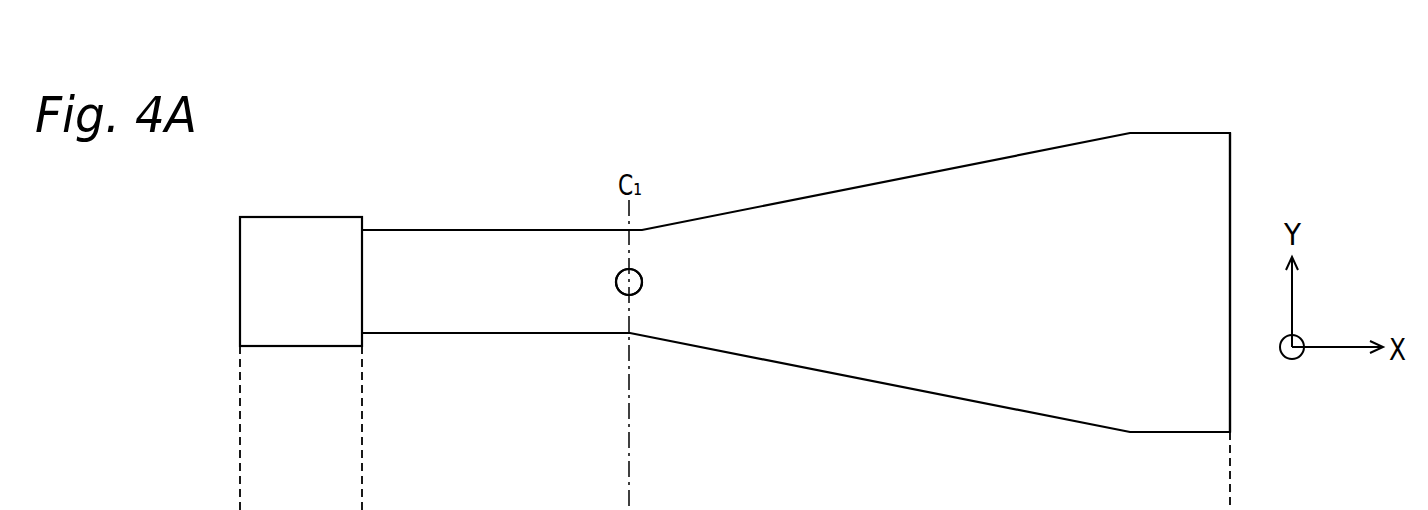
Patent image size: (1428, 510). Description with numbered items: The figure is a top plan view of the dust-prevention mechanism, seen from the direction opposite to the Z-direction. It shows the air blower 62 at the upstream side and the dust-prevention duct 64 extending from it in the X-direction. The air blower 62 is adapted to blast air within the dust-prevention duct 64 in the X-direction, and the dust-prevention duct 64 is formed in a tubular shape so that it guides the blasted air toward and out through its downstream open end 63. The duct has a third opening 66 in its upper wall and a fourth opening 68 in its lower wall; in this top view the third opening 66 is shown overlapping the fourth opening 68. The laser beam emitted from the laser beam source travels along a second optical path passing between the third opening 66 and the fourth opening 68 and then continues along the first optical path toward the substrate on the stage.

The air blower 62 is at (306, 216).
The downstream open end 63 is at (1231, 373).
The dust-prevention duct 64 is at (857, 205).
The third opening 66 is at (630, 268).
The fourth opening 68 is at (629, 282).